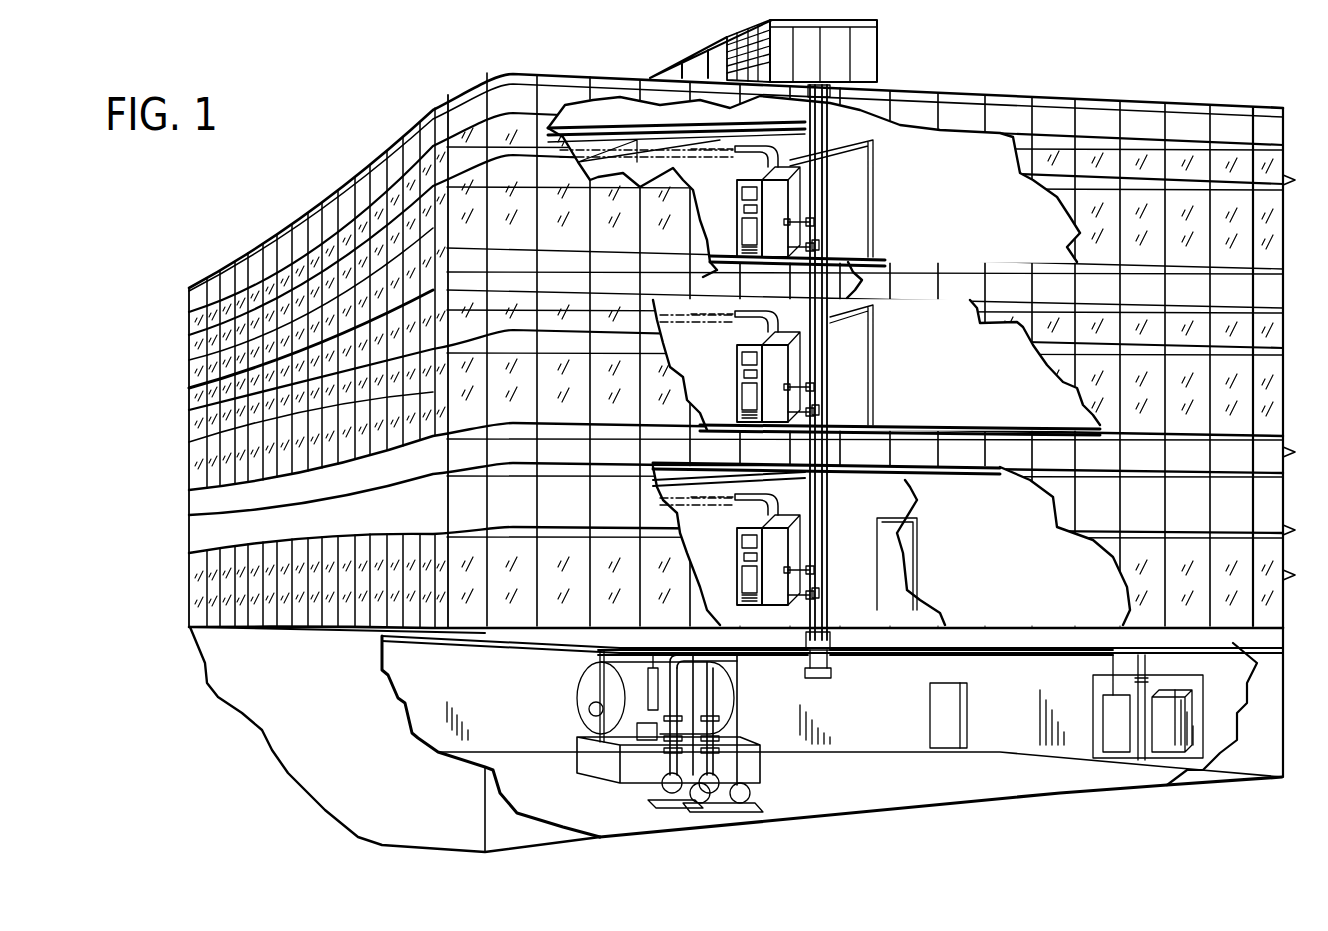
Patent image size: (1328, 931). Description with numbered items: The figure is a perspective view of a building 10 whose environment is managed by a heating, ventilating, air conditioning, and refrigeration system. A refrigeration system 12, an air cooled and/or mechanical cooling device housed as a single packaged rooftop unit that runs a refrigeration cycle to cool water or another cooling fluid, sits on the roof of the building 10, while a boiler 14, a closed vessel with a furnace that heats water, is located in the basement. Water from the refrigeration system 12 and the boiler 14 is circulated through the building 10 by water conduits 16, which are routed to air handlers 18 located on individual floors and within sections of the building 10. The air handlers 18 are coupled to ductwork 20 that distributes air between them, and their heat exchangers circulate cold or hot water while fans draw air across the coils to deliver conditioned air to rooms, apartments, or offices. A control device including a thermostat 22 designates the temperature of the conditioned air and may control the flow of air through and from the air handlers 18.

The building 10 is at (1143, 108).
The refrigeration system 12 is at (730, 40).
The boiler 14 is at (597, 700).
The water conduits 16 is at (812, 593).
The air handlers 18 is at (792, 191).
The ductwork 20 is at (703, 152).
The thermostat 22 is at (760, 208).